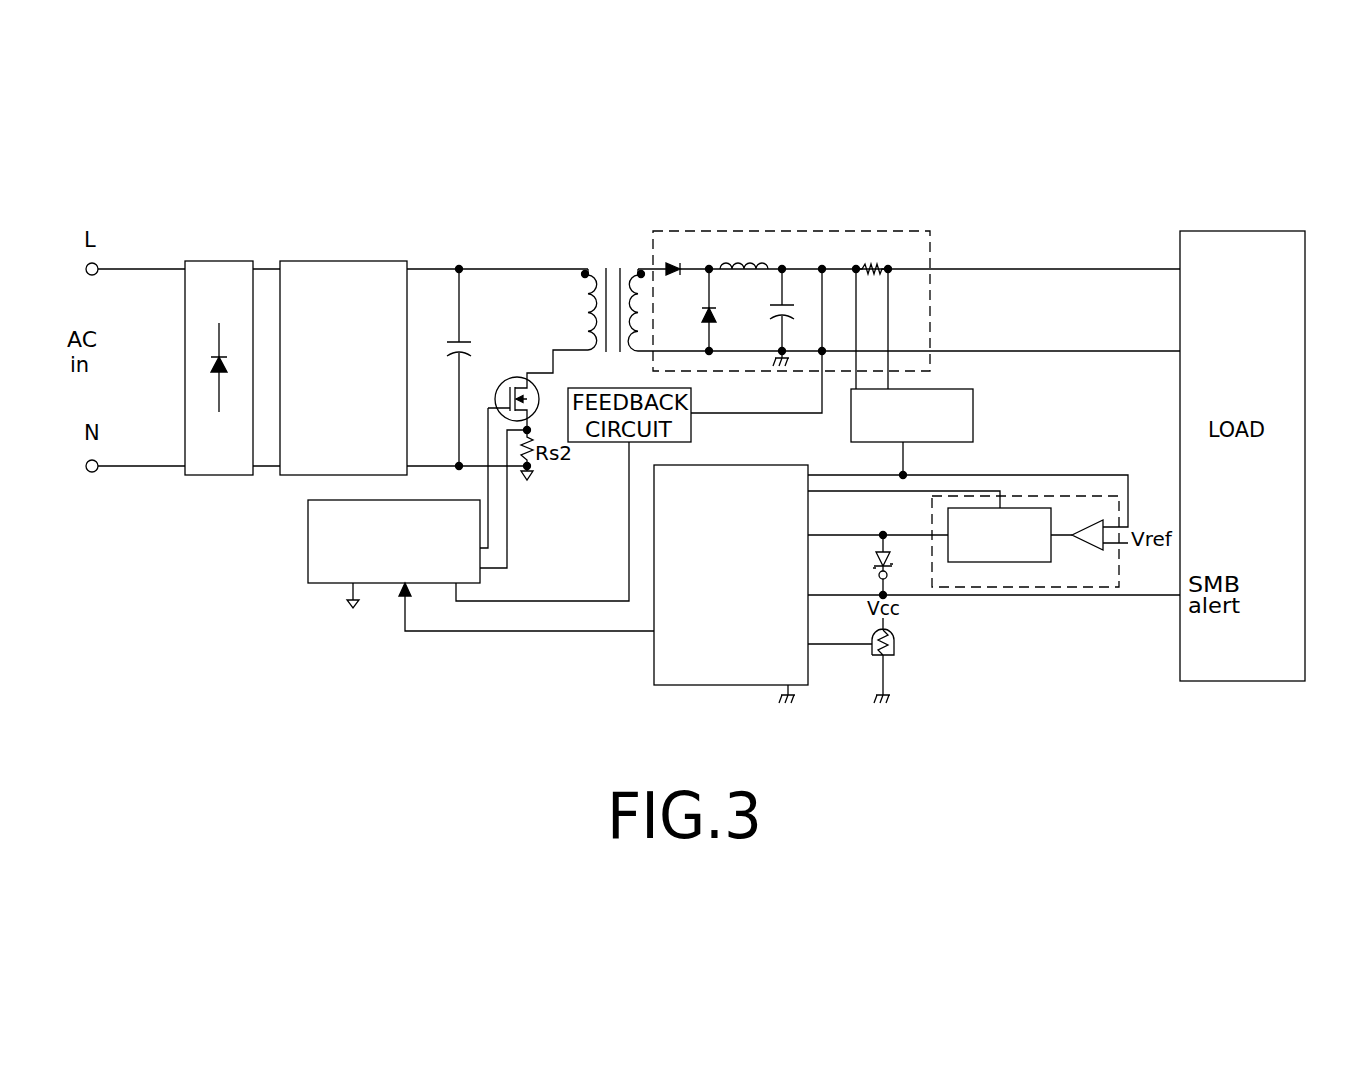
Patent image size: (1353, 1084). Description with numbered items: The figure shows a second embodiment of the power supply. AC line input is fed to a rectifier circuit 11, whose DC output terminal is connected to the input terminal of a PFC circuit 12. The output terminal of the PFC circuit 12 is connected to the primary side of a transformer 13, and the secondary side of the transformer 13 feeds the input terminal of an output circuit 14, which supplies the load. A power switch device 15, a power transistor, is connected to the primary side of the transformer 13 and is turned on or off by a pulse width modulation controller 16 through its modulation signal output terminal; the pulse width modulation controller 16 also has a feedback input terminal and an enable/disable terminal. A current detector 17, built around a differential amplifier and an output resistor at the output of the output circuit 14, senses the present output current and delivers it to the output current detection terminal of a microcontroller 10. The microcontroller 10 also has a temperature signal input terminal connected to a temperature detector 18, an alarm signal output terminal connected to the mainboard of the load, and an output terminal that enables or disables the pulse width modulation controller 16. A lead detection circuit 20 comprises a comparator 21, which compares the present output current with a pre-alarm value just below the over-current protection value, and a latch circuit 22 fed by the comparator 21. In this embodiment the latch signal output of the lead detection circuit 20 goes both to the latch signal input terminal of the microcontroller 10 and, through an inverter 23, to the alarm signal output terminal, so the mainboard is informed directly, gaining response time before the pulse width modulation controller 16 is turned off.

The microcontroller 10 is at (654, 660).
The rectifier circuit 11 is at (233, 261).
The PFC circuit 12 is at (358, 261).
The transformer 13 is at (620, 244).
The output circuit 14 is at (850, 231).
The power switch device 15 is at (507, 377).
The PWM controller 16 is at (308, 530).
The current detector 17 is at (973, 410).
The temperature detector 18 is at (896, 645).
The lead detection circuit 20 is at (932, 519).
The comparator 21 is at (1093, 550).
The latch circuit 22 is at (1012, 562).
The inverter 23 is at (876, 560).